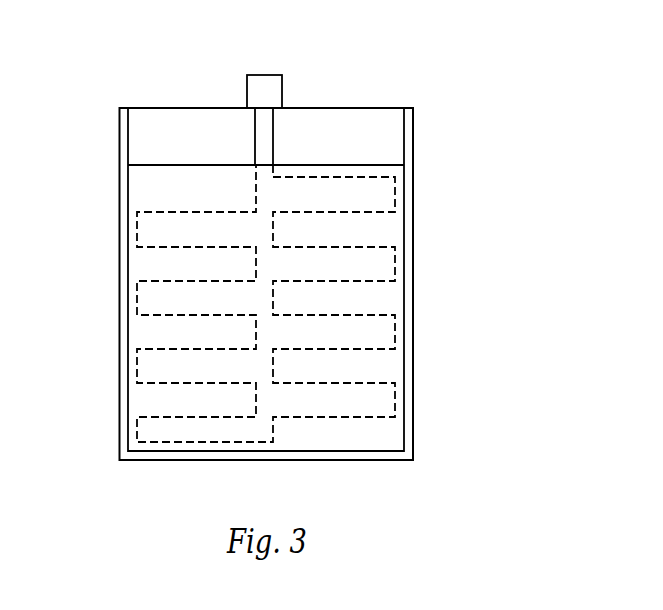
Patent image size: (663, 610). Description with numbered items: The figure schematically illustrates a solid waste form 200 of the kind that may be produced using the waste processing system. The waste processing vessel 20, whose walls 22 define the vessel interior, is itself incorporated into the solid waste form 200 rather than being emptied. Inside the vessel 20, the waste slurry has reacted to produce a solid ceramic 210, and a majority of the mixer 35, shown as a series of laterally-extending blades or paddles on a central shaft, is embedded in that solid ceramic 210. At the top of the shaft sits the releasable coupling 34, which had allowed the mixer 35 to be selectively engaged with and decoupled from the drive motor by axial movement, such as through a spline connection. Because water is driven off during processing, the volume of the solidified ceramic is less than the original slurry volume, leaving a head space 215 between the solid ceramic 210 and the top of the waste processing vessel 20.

The solid waste form 200 is at (298, 266).
The waste processing vessel 20 is at (386, 471).
The walls 22 is at (408, 327).
The head space 215 is at (150, 142).
The solid ceramic 210 is at (202, 194).
The releasable coupling 34 is at (275, 92).
The mixer 35 is at (163, 280).